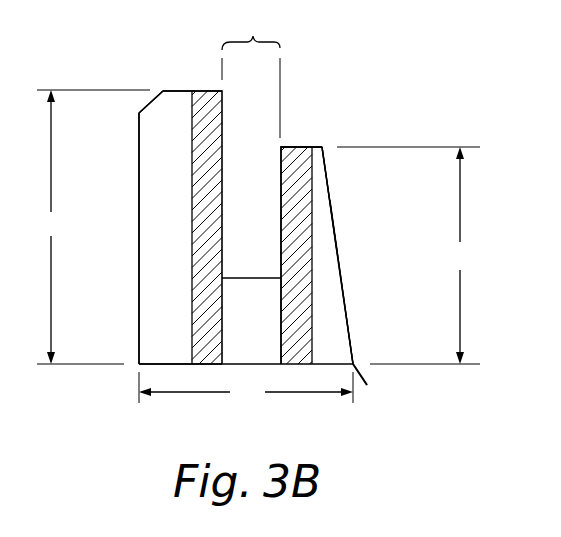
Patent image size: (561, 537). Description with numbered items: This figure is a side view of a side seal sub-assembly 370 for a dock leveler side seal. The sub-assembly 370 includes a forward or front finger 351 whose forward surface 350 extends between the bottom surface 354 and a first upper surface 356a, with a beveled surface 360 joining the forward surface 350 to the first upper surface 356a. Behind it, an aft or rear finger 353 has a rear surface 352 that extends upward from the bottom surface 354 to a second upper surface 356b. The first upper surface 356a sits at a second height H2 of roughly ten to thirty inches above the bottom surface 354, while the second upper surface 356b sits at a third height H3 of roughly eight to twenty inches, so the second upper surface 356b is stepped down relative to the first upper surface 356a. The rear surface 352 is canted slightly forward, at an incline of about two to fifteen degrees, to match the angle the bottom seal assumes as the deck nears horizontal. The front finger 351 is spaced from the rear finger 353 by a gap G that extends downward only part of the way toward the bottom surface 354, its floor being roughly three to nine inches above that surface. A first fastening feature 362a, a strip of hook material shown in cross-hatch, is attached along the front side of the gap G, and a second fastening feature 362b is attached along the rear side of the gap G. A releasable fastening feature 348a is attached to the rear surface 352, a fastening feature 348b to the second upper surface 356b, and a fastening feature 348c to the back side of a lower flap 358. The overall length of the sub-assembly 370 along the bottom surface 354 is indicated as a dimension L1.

The forward surface 350 is at (139, 234).
The front finger 351 is at (160, 156).
The rear surface 352 is at (342, 283).
The rear finger 353 is at (321, 187).
The bottom surface 354 is at (180, 365).
The first upper surface 356a is at (166, 90).
The second upper surface 356b is at (314, 146).
The lower flap 358 is at (362, 383).
The beveled surface 360 is at (148, 103).
The first fastening feature 362a is at (209, 102).
The second fastening feature 362b is at (298, 155).
The releasable fastening feature 348a is at (335, 230).
The fastening feature 348b is at (290, 145).
The fastening feature 348c is at (363, 376).
The side seal sub-assembly 370 is at (390, 102).
The gap G is at (253, 35).
The second height H2 is at (93, 227).
The third height H3 is at (408, 255).
The length of bump L1 is at (246, 387).